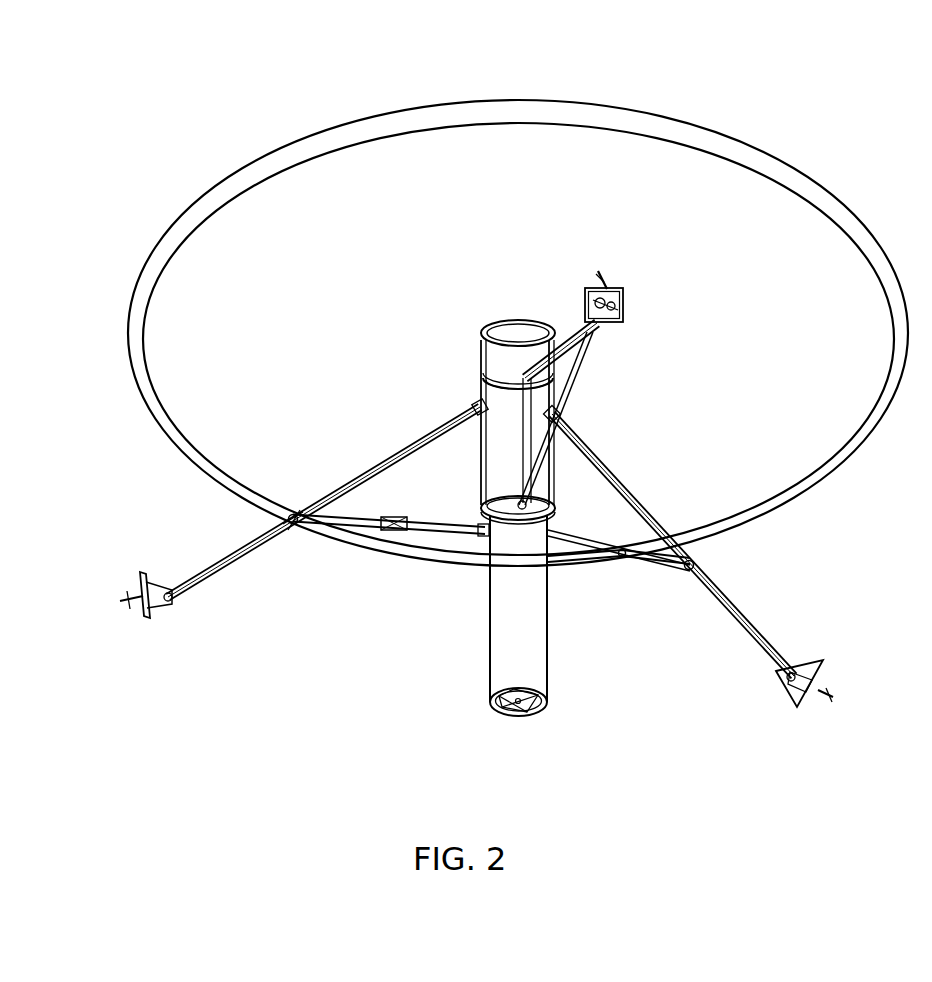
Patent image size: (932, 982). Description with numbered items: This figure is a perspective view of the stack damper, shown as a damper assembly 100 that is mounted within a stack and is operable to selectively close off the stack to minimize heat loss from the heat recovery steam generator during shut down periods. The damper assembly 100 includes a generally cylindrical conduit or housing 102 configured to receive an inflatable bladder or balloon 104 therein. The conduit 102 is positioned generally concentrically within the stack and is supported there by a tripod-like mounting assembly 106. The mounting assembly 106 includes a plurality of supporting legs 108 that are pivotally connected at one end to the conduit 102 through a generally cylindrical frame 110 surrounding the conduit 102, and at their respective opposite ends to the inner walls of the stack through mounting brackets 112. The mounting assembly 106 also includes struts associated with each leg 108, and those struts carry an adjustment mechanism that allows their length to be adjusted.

The damper assembly 100 is at (637, 86).
The conduit 102 is at (500, 622).
The inflatable bladder 104 is at (292, 185).
The mounting assembly 106 is at (727, 555).
The supporting legs 108 is at (228, 562).
The cylindrical frame 110 is at (482, 466).
The mounting brackets 112 is at (626, 305).